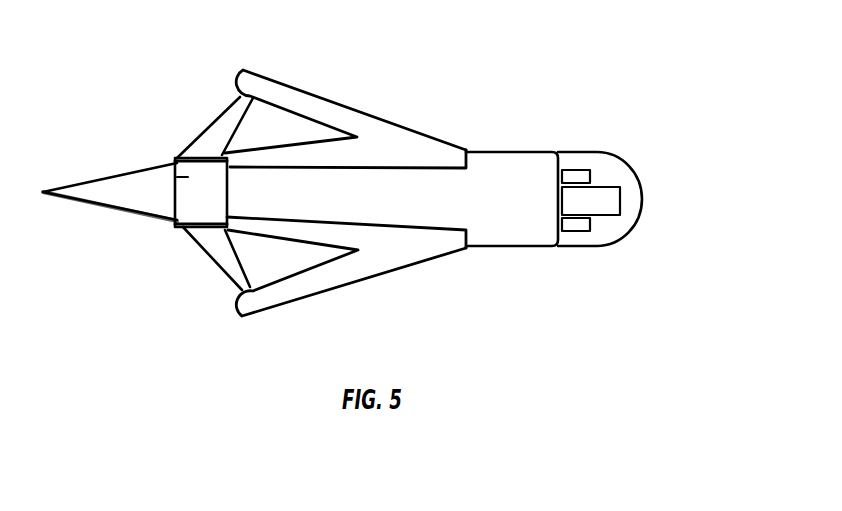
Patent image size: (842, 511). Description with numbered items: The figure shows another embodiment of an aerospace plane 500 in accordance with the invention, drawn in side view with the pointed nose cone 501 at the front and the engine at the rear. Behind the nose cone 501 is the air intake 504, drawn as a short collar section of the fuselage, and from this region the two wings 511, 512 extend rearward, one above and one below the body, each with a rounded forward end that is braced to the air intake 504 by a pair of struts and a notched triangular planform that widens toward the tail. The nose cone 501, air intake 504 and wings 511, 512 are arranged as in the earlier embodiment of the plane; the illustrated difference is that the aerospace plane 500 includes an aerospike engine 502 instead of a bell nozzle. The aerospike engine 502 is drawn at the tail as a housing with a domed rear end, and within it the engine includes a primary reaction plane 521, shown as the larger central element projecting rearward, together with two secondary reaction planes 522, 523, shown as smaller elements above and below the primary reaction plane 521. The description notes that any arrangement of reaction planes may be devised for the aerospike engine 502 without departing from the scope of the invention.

The aerospace plane 500 is at (470, 49).
The pointed tip 501 is at (88, 185).
The aerospike engine 502 is at (626, 152).
The air intake 504 is at (176, 160).
The wing 511 is at (285, 88).
The wing 512 is at (352, 278).
The primary reaction plane 521 is at (612, 203).
The secondary reaction plane 522 is at (590, 181).
The secondary reaction plane 523 is at (592, 221).